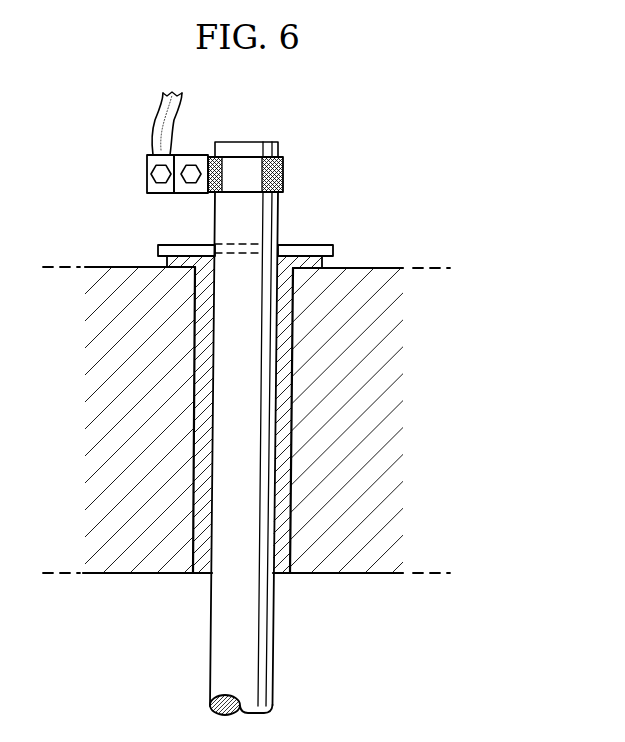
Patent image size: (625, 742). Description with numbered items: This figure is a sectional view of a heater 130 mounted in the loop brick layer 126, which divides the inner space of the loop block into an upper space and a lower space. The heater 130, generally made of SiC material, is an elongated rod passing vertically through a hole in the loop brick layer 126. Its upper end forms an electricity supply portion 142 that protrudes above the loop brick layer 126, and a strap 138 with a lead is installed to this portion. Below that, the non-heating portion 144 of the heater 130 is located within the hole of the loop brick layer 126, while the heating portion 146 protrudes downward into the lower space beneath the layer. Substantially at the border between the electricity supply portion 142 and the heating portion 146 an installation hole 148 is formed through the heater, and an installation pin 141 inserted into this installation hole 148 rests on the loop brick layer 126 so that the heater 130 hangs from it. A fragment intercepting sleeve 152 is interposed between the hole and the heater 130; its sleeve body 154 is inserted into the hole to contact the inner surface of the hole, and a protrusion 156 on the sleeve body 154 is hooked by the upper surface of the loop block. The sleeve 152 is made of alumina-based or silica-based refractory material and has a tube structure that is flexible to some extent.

The loop brick layer 126 is at (387, 573).
The heater 130 is at (175, 694).
The strap 138 is at (138, 199).
The installation pin 141 is at (182, 243).
The electricity supply portion 142 is at (279, 204).
The non-heating portion 144 is at (253, 535).
The heating portion 146 is at (268, 670).
The installation hole 148 is at (262, 244).
The sleeve 152 is at (200, 582).
The sleeve body 154 is at (197, 530).
The protrusion 156 is at (325, 266).